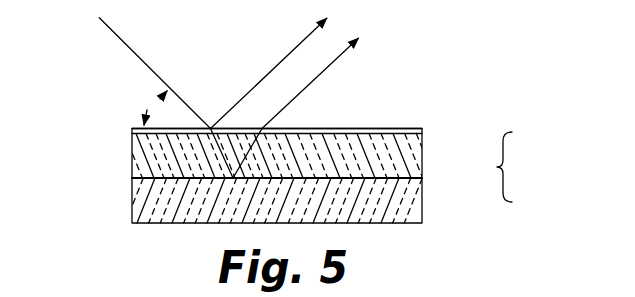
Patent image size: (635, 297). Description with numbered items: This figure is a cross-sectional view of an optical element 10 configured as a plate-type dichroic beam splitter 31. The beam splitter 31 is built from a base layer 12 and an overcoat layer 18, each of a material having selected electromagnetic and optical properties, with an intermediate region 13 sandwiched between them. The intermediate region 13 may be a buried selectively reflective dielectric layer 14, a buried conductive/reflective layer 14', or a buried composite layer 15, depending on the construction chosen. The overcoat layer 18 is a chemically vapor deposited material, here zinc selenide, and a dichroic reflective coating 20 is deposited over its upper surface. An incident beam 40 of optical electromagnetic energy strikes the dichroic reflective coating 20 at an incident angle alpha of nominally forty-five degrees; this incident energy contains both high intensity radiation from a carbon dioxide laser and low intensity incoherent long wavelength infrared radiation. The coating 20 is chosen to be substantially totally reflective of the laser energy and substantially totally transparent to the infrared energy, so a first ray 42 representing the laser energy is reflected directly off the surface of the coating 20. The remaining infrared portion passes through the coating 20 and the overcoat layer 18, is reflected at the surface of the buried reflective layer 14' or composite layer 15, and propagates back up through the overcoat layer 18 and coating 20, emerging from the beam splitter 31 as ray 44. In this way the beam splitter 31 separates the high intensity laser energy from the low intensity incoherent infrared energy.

The optical element 10 is at (318, 156).
The base layer 12 is at (422, 208).
The intermediate region 13 is at (428, 176).
The selectively reflective dielectric layer 14 is at (363, 159).
The conductive/reflective layer 14' is at (363, 168).
The composite layer 15 is at (363, 186).
The overcoat layer 18 is at (422, 142).
The dichroic reflective coating 20 is at (402, 128).
The plate-type dichroic beam splitter 31 is at (131, 107).
The incident beam 40 is at (140, 56).
The first ray 42 is at (255, 88).
The emerging ray 44 is at (290, 102).